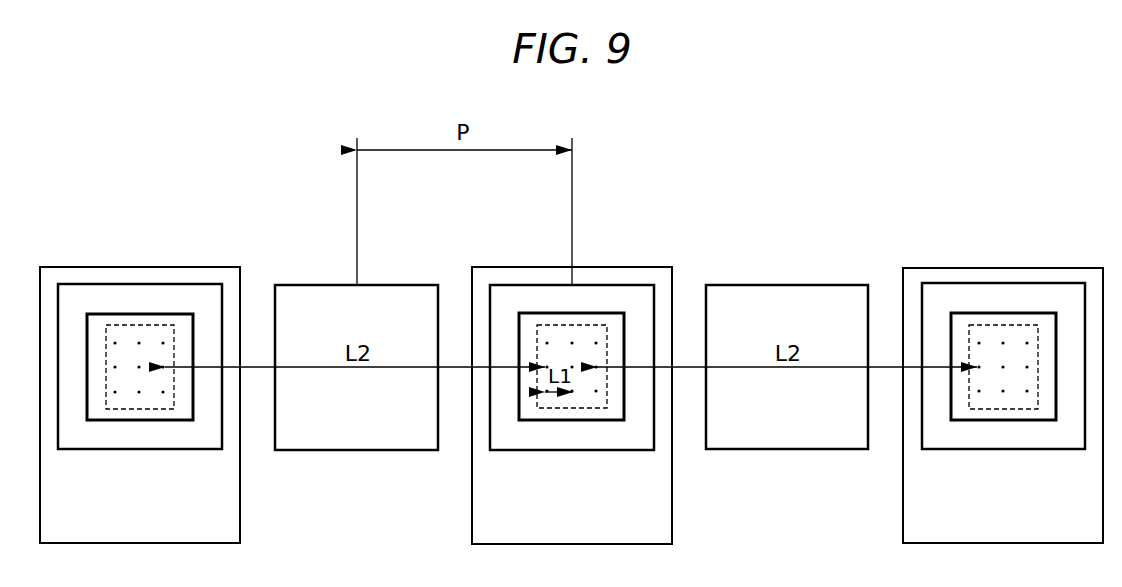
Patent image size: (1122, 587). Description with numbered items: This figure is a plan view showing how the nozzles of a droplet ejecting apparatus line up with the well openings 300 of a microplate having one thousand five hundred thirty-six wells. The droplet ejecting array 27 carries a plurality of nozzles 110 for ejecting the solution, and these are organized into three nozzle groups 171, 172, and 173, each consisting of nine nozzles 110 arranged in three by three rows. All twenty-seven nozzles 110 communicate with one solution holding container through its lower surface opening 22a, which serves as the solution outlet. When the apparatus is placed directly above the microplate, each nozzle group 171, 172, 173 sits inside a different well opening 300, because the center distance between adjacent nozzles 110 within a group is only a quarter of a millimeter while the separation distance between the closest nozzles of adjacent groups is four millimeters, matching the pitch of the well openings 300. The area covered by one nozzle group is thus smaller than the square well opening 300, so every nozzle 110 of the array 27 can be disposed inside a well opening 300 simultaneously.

The lower surface opening 22a is at (123, 311).
The nozzle 110 is at (163, 342).
The nozzle group 171 is at (142, 411).
The nozzle group 172 is at (573, 410).
The nozzle group 173 is at (1004, 410).
The droplet ejecting array 27 is at (1001, 268).
The well opening 300 is at (787, 285).